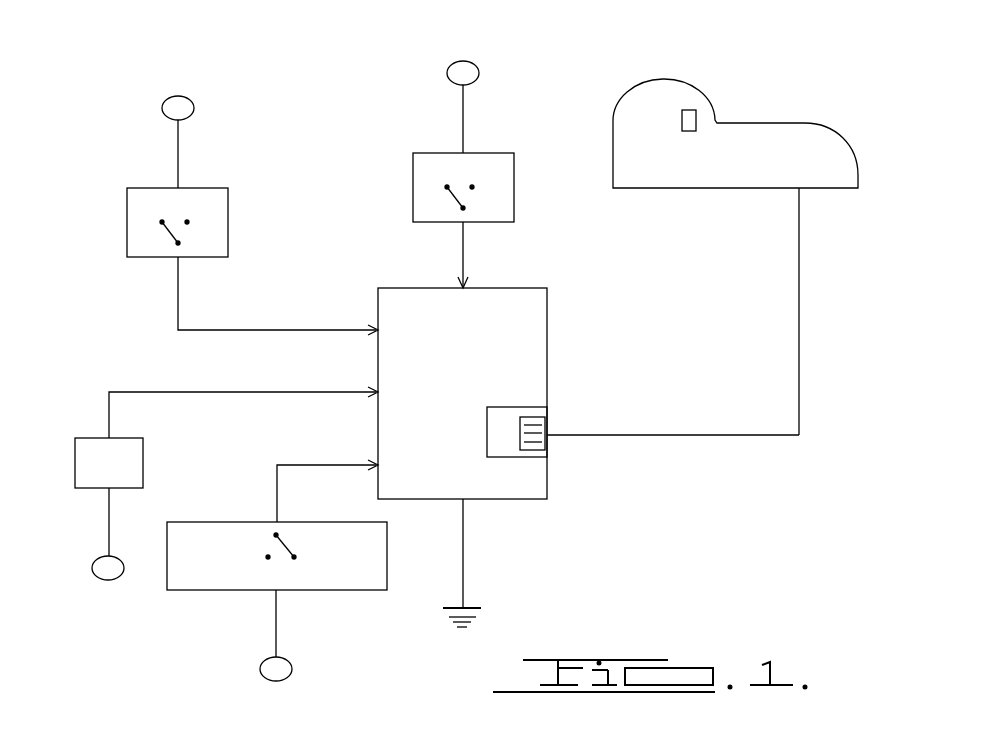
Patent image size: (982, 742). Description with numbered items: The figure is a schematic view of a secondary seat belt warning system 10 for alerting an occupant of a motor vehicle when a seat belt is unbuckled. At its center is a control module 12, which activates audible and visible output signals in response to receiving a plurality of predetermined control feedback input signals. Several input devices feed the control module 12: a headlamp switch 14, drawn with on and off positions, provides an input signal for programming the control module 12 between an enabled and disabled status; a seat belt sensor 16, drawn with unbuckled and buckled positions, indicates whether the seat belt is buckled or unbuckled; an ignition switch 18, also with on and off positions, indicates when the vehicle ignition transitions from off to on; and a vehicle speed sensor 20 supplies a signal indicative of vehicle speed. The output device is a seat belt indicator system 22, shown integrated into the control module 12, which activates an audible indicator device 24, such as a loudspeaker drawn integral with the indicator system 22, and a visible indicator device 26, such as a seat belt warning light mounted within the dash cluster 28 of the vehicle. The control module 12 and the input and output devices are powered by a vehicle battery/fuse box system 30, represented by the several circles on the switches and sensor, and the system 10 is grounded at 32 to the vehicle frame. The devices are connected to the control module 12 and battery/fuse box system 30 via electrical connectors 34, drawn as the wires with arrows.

The secondary seat belt warning system 10 is at (278, 118).
The control module 12 is at (547, 337).
The headlamp switch 14 is at (228, 222).
The seat belt sensor 16 is at (215, 522).
The ignition switch 18 is at (413, 190).
The vehicle speed sensor 20 is at (88, 442).
The seat belt indicator system 22 is at (487, 447).
The audible indicator device 24 is at (530, 420).
The visible indicator device 26 is at (690, 114).
The dash cluster 28 is at (837, 190).
The vehicle battery/fuse box system 30 is at (162, 110).
The ground 32 is at (472, 604).
The electrical connectors 34 is at (463, 250).